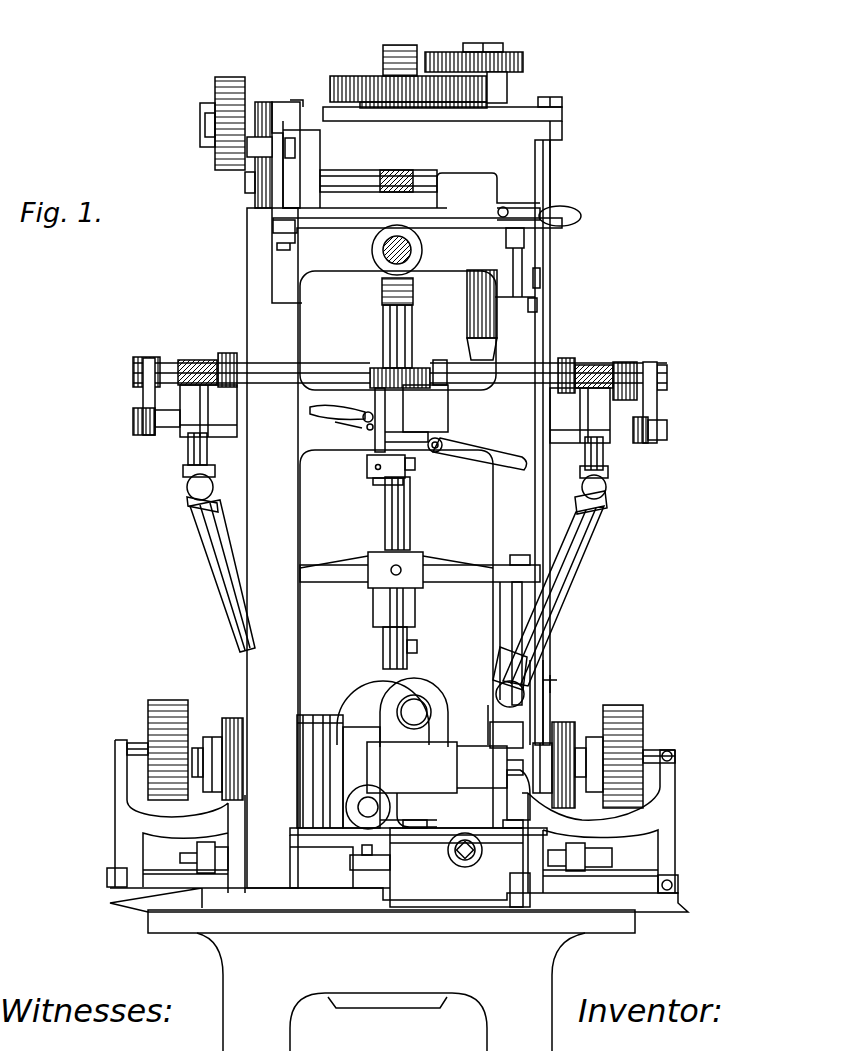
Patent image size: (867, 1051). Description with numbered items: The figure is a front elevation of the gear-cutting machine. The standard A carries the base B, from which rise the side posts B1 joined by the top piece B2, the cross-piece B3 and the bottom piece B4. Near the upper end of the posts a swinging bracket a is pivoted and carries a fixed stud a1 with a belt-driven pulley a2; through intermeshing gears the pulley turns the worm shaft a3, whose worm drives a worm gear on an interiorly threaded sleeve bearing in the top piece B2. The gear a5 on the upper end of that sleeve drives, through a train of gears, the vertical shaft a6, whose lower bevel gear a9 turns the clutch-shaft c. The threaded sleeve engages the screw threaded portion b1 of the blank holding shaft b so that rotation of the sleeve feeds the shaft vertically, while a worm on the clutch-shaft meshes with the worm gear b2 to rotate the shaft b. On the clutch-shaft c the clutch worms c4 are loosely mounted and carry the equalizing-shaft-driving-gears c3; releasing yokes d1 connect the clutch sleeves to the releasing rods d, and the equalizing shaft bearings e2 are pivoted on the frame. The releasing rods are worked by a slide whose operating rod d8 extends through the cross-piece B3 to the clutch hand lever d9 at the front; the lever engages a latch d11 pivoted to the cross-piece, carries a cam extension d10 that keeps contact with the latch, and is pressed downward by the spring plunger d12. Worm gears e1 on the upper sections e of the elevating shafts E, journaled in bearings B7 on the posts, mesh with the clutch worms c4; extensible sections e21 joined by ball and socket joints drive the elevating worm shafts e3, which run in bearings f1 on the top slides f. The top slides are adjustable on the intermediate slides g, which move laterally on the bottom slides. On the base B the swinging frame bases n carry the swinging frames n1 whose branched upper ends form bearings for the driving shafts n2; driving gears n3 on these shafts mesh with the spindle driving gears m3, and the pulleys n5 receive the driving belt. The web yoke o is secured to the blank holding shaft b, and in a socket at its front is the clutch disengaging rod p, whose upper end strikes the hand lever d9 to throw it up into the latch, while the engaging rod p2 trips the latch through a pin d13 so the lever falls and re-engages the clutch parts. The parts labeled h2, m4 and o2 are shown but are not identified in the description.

The standard A is at (391, 992).
The base B is at (148, 921).
The side posts B1 is at (396, 514).
The top piece B2 is at (533, 158).
The cross-piece B3 is at (398, 549).
The bottom piece B4 is at (418, 858).
The bearings for the elevating shafts B7 is at (395, 414).
The swinging bracket a is at (482, 199).
The fixed stud a1 is at (200, 128).
The pulley a2 is at (240, 92).
The worm shaft a3 is at (355, 182).
The gear a5 is at (343, 78).
The vertical shaft a6 is at (490, 45).
The bevel gear a9 is at (465, 355).
The blank holding shaft b is at (412, 512).
The screw threaded portion b1 is at (385, 70).
The worm gear b2 is at (412, 368).
The clutch-shaft c is at (338, 370).
The equalizing-shaft-driving-gears c3 is at (228, 360).
The clutch worms c4 is at (170, 360).
The releasing rods d is at (158, 437).
The releasing yokes d1 is at (143, 403).
The slide operating rod d8 is at (437, 453).
The clutch hand lever d9 is at (480, 455).
The cam extension d10 is at (367, 431).
The latch d11 is at (350, 423).
The spring plunger d12 is at (400, 440).
The pin d13 is at (367, 460).
The upper sections of the elevating shafts e is at (190, 455).
The worm gears e1 is at (196, 362).
The equalizing shaft bearings e2 is at (225, 585).
The extensible sections e21 is at (555, 590).
The elevating worm shafts e3 is at (500, 710).
The elevating shafts E is at (389, 575).
The top slides f is at (494, 832).
The bearings for the elevating worm shafts f1 is at (506, 735).
The intermediate slide g is at (425, 848).
The lever h2 is at (416, 415).
The spindle driving gears m3 is at (222, 800).
The clutch hub m4 is at (533, 762).
The swinging frame bases n is at (392, 882).
The swinging frames n1 is at (118, 782).
The driving shafts n2 is at (137, 742).
The driving gears n3 is at (235, 724).
The pulleys n5 is at (168, 702).
The web yoke o is at (470, 577).
The rod o2 is at (512, 612).
The clutch disengaging rod p is at (385, 520).
The engaging rod p2 is at (372, 470).